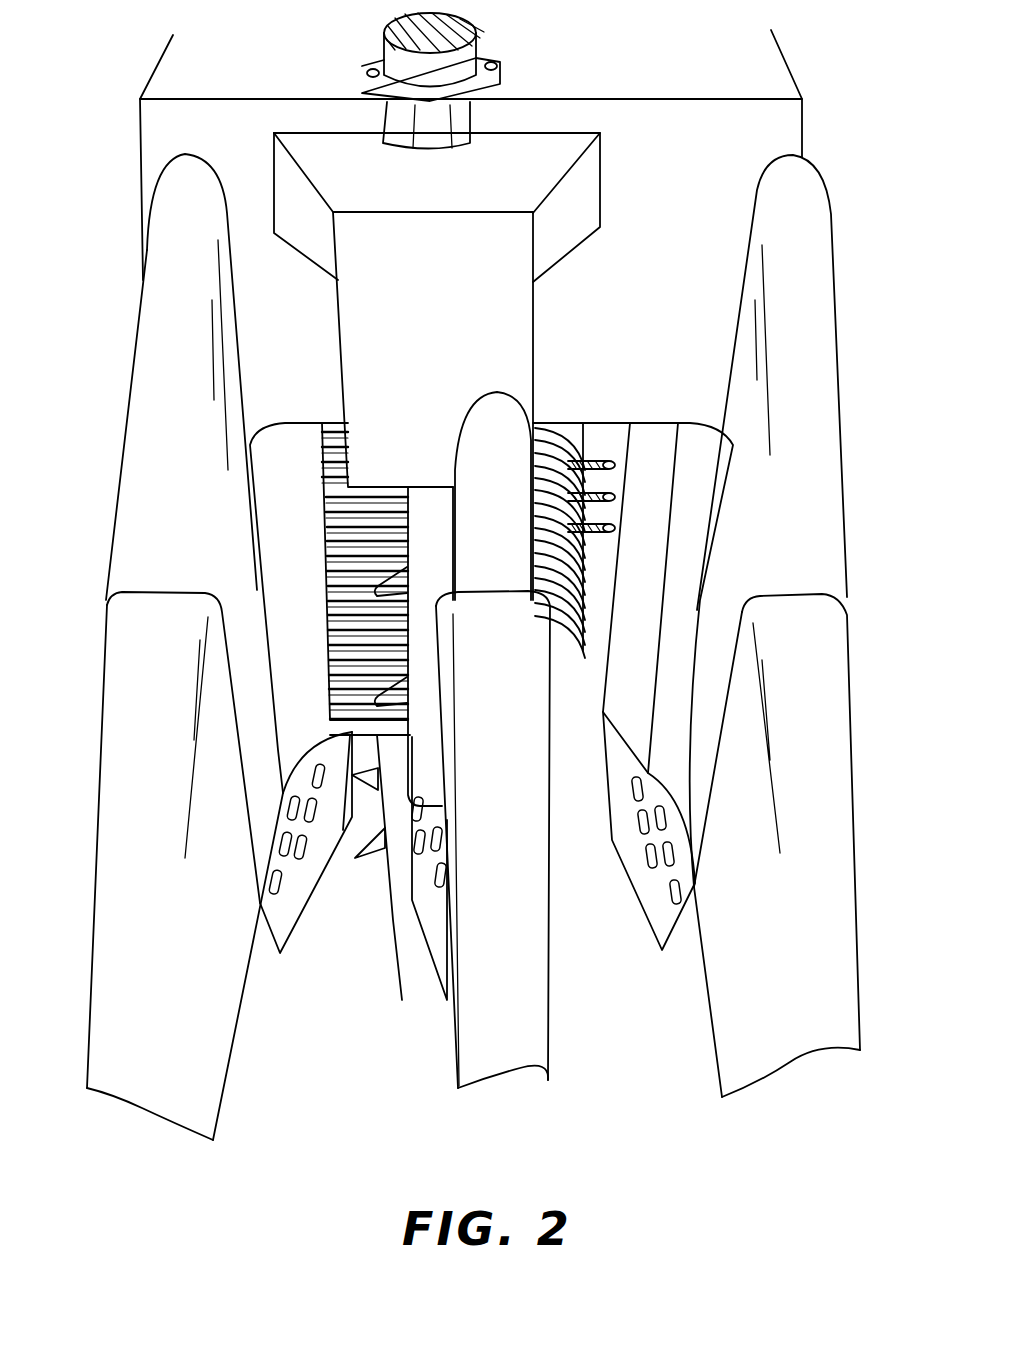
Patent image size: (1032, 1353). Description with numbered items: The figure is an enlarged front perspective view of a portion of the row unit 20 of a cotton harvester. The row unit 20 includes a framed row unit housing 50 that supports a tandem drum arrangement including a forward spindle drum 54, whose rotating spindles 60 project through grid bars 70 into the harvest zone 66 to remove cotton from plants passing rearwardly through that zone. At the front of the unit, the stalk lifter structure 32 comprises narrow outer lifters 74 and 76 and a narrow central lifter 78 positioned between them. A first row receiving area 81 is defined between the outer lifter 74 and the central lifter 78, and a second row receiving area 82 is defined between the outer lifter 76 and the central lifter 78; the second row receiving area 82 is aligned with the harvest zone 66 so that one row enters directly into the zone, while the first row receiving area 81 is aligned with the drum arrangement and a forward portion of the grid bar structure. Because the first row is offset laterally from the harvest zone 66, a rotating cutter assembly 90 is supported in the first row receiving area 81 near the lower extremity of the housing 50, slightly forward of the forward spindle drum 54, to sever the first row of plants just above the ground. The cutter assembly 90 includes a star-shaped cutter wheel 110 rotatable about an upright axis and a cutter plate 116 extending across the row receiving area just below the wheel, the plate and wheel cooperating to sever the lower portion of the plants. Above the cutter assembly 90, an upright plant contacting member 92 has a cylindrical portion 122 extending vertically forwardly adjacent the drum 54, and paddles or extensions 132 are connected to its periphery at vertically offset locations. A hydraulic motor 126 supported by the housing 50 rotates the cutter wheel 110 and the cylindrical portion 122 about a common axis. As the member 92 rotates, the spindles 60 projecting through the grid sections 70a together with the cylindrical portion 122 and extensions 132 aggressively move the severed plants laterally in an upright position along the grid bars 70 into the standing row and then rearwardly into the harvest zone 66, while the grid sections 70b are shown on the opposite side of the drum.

The row unit 20 is at (862, 215).
The stalk lifter structure 32 is at (890, 862).
The row unit housing 50 is at (790, 85).
The forward spindle drum 54 is at (340, 515).
The spindles 60 is at (616, 466).
The harvest zone 66 is at (603, 690).
The grid bars 70 is at (470, 541).
The grid sections 70a is at (352, 660).
The second set of fins 70b is at (602, 462).
The outer lifter 74 is at (105, 845).
The outer lifter 76 is at (850, 940).
The central lifter 78 is at (470, 1010).
The first row receiving area 81 is at (348, 973).
The second row receiving area 82 is at (625, 979).
The rotating cutter assembly 90 is at (376, 872).
The upright plant contacting member 92 is at (439, 497).
The star-shaped cutter wheel 110 is at (358, 860).
The cutter plate 116 is at (340, 830).
The cylindrical portion 122 is at (435, 545).
The hydraulic motor 126 is at (478, 50).
The paddles or extensions 132 is at (375, 703).